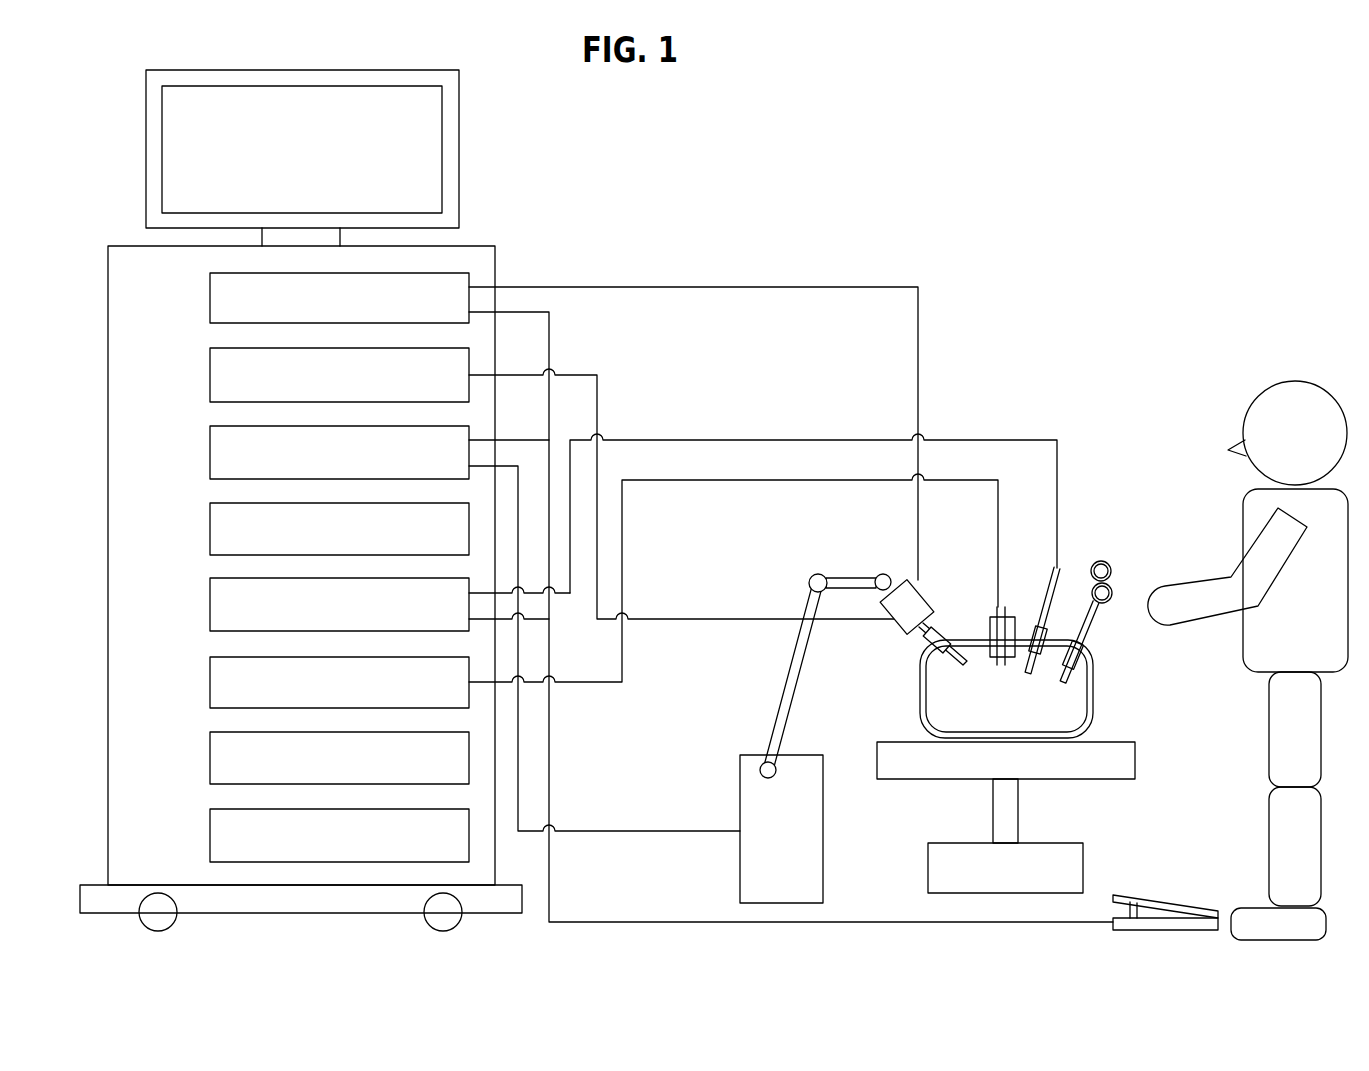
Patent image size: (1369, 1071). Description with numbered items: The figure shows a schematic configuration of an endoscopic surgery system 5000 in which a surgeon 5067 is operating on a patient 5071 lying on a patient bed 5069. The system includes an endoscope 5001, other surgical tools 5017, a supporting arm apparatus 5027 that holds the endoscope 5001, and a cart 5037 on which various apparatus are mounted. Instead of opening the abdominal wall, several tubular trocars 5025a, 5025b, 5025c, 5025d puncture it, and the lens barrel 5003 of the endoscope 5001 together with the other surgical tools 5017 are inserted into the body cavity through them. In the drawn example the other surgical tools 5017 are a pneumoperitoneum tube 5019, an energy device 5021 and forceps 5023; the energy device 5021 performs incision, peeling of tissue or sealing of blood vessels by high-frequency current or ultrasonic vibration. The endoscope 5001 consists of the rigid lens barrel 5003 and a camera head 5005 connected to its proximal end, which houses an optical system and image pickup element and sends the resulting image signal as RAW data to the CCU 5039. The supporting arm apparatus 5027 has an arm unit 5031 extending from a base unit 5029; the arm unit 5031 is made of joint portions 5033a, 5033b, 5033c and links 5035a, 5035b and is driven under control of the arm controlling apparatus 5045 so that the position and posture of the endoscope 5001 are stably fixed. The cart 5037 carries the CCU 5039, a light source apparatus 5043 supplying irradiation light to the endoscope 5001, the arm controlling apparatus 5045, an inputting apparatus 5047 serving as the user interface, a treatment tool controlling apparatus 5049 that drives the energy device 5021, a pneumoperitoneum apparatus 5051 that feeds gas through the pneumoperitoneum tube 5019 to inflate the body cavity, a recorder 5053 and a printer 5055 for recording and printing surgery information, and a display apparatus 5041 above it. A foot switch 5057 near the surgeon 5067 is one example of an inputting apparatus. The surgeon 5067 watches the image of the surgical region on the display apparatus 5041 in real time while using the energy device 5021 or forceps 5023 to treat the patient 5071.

The endoscopic surgery system 5000 is at (1277, 137).
The endoscope 5001 is at (900, 579).
The lens barrel 5003 is at (933, 652).
The camera head 5005 is at (904, 630).
The other surgical tools 5017 is at (1112, 482).
The pneumoperitoneum tube 5019 is at (1003, 608).
The energy device 5021 is at (1055, 583).
The forceps 5023 is at (1112, 572).
The trocar 5025a is at (934, 676).
The trocar 5025b is at (985, 630).
The trocar 5025c is at (1045, 664).
The trocar 5025d is at (1093, 655).
The supporting arm apparatus 5027 is at (728, 858).
The base unit 5029 is at (825, 857).
The arm unit 5031 is at (734, 655).
The joint portion 5033a is at (876, 575).
The joint portion 5033b is at (808, 583).
The joint portion 5033c is at (758, 770).
The link 5035a is at (850, 578).
The link 5035b is at (792, 698).
The cart 5037 is at (466, 246).
The CCU 5039 is at (210, 298).
The display apparatus 5041 is at (146, 150).
The light source apparatus 5043 is at (210, 373).
The arm controlling apparatus 5045 is at (210, 451).
The inputting apparatus 5047 is at (210, 526).
The treatment tool controlling apparatus 5049 is at (210, 603).
The pneumoperitoneum apparatus 5051 is at (210, 681).
The recorder 5053 is at (210, 756).
The printer 5055 is at (210, 834).
The foot switch 5057 is at (1163, 895).
The surgeon 5067 is at (1292, 379).
The patient bed 5069 is at (1137, 759).
The patient 5071 is at (1095, 691).